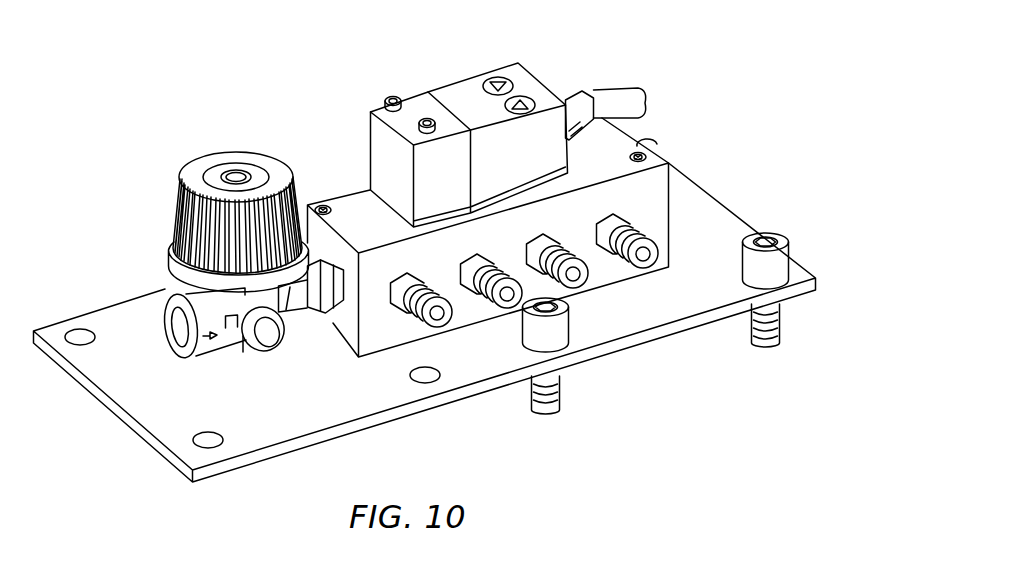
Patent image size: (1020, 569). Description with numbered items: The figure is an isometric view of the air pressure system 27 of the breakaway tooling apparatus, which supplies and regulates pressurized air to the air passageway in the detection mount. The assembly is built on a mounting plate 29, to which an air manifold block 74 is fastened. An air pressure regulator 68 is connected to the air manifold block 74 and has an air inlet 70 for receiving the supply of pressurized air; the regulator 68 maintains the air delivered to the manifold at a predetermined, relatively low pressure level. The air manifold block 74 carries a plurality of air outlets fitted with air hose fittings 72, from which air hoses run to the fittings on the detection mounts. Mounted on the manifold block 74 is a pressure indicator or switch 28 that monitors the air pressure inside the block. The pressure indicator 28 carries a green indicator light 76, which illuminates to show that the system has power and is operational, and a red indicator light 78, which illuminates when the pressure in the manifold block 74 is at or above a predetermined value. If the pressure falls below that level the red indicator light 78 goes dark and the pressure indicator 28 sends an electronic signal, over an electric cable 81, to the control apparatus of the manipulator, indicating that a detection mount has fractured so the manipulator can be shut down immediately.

The air pressure system 27 is at (642, 68).
The pressure indicator or switch 28 is at (476, 129).
The mounting plate 29 is at (705, 325).
The air pressure regulator 68 is at (248, 152).
The air inlet 70 is at (168, 327).
The air hose fittings 72 is at (633, 268).
The air manifold block 74 is at (669, 188).
The green indicator light 76 is at (542, 112).
The red indicator light 78 is at (493, 78).
The electric cable 81 is at (633, 106).